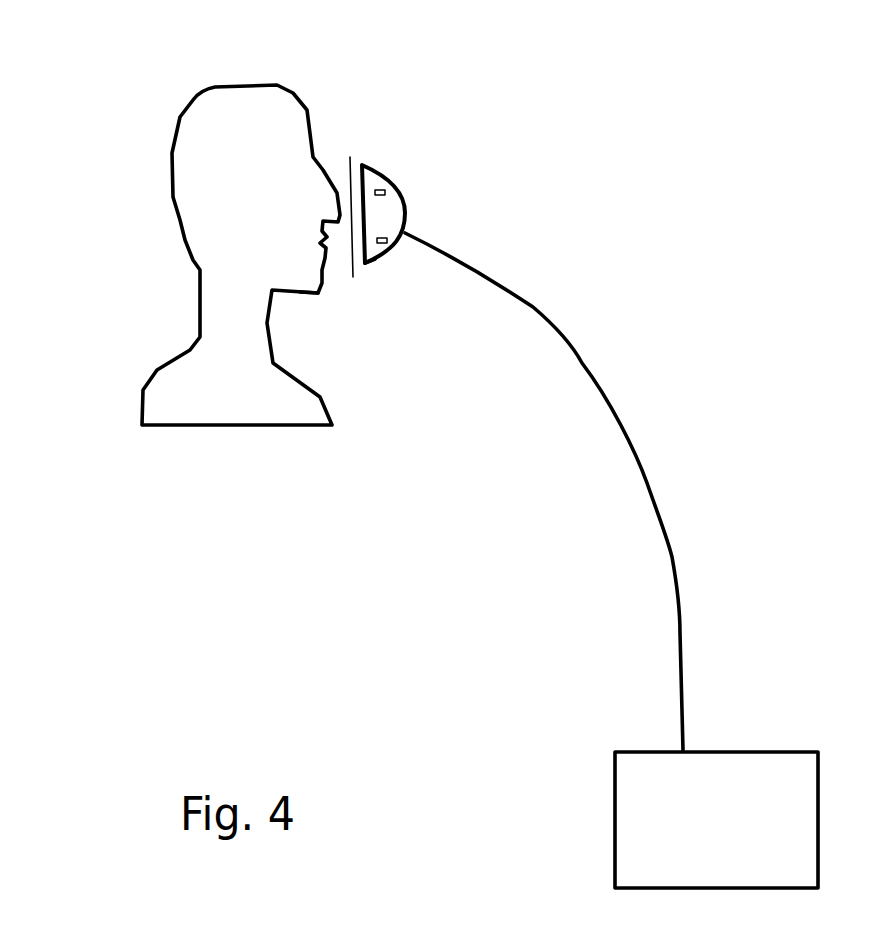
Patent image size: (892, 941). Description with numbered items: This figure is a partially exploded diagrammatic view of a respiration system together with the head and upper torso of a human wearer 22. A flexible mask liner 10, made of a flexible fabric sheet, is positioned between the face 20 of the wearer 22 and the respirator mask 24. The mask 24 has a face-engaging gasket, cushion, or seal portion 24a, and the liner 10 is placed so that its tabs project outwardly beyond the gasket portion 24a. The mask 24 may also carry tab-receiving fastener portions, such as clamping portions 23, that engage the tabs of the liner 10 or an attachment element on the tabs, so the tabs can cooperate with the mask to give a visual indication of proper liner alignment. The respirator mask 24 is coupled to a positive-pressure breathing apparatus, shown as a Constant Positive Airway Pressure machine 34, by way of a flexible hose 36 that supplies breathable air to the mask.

The mask liner 10 is at (355, 153).
The face 20 is at (332, 287).
The wearer 22 is at (88, 352).
The clamping portions 23 is at (380, 188).
The respirator mask 24 is at (402, 198).
The gasket portion 24a is at (365, 272).
The CPAP machine 34 is at (752, 750).
The flexible hose 36 is at (623, 422).